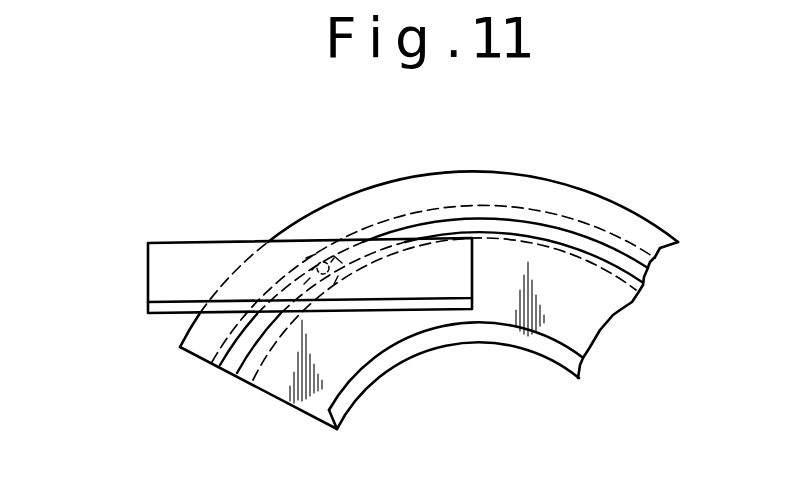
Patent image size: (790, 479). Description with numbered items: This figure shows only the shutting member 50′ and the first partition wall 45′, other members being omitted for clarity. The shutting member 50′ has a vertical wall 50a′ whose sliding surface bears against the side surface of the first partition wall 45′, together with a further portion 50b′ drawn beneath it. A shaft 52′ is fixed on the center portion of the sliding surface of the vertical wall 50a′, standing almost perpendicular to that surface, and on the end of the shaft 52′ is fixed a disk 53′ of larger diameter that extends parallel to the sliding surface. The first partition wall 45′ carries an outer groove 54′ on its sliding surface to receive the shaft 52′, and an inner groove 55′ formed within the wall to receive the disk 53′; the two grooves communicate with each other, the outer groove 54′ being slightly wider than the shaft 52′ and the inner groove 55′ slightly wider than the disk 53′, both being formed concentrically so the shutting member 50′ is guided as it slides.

The first partition wall 45′ is at (515, 185).
The shutting member 50′ is at (267, 271).
The vertical wall 50a′ is at (167, 270).
The lower portion of slider plate 50b′ is at (165, 313).
The shaft 52′ is at (328, 260).
The disk 53′ is at (312, 258).
The outer groove 54′ is at (577, 238).
The inner groove 55′ is at (628, 248).